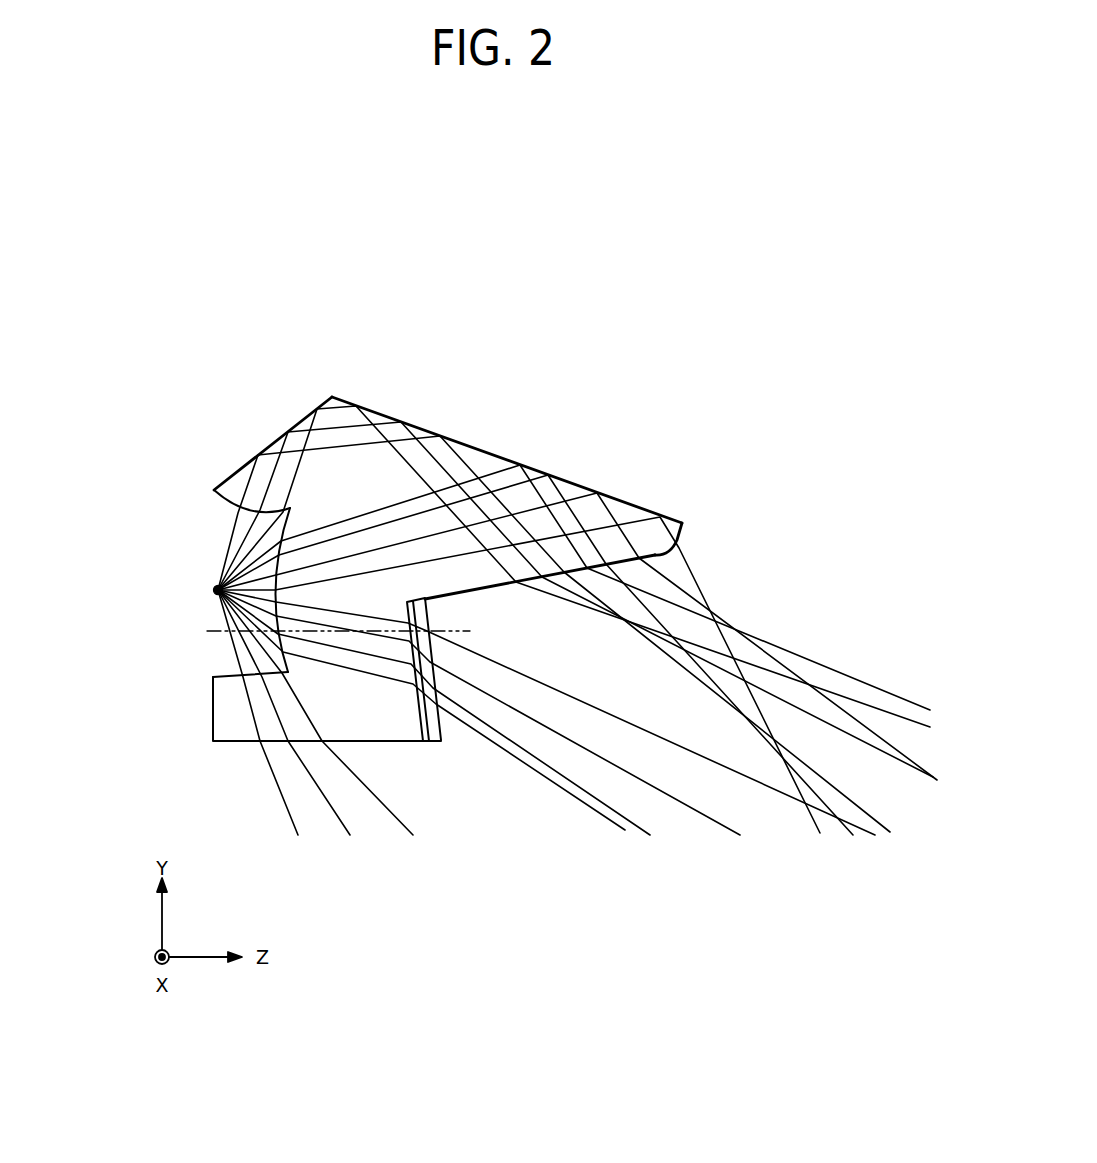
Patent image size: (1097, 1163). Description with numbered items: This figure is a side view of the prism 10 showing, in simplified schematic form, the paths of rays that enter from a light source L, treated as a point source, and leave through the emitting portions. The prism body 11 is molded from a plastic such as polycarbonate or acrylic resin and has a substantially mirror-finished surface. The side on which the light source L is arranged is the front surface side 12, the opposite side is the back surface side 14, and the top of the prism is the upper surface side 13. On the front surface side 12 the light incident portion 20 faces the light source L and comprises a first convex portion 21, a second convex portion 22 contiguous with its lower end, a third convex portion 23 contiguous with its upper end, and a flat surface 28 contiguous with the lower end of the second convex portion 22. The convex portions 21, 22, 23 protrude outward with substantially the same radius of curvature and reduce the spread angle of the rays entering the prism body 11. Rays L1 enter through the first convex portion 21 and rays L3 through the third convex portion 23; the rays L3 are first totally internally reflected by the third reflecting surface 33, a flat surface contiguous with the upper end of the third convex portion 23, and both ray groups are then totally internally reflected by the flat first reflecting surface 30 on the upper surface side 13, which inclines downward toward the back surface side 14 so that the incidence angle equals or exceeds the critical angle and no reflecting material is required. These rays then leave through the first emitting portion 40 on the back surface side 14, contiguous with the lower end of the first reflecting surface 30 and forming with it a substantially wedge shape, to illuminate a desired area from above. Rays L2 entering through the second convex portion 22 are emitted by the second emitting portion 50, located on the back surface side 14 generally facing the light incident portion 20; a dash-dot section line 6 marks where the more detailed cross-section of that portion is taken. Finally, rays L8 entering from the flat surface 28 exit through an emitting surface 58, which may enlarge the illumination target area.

The prism 10 is at (543, 384).
The prism body 11 is at (568, 492).
The front surface side 12 is at (131, 574).
The upper surface side 13 is at (366, 382).
The back surface side 14 is at (523, 656).
The light incident portion 20 is at (173, 633).
The first convex portion 21 is at (247, 557).
The second convex portion 22 is at (247, 642).
The third convex portion 23 is at (230, 503).
The flat surface 28 is at (213, 670).
The first reflecting surface 30 is at (627, 505).
The third reflecting surface 33 is at (258, 455).
The first emitting portion 40 is at (507, 582).
The second emitting portion 50 is at (441, 718).
The emitting surface 58 is at (236, 742).
The section line 6- 6 is at (341, 632).
The light source L is at (212, 589).
The rays L1 is at (320, 527).
The rays L2 is at (333, 660).
The rays L3 is at (305, 415).
The rays L8 is at (250, 713).